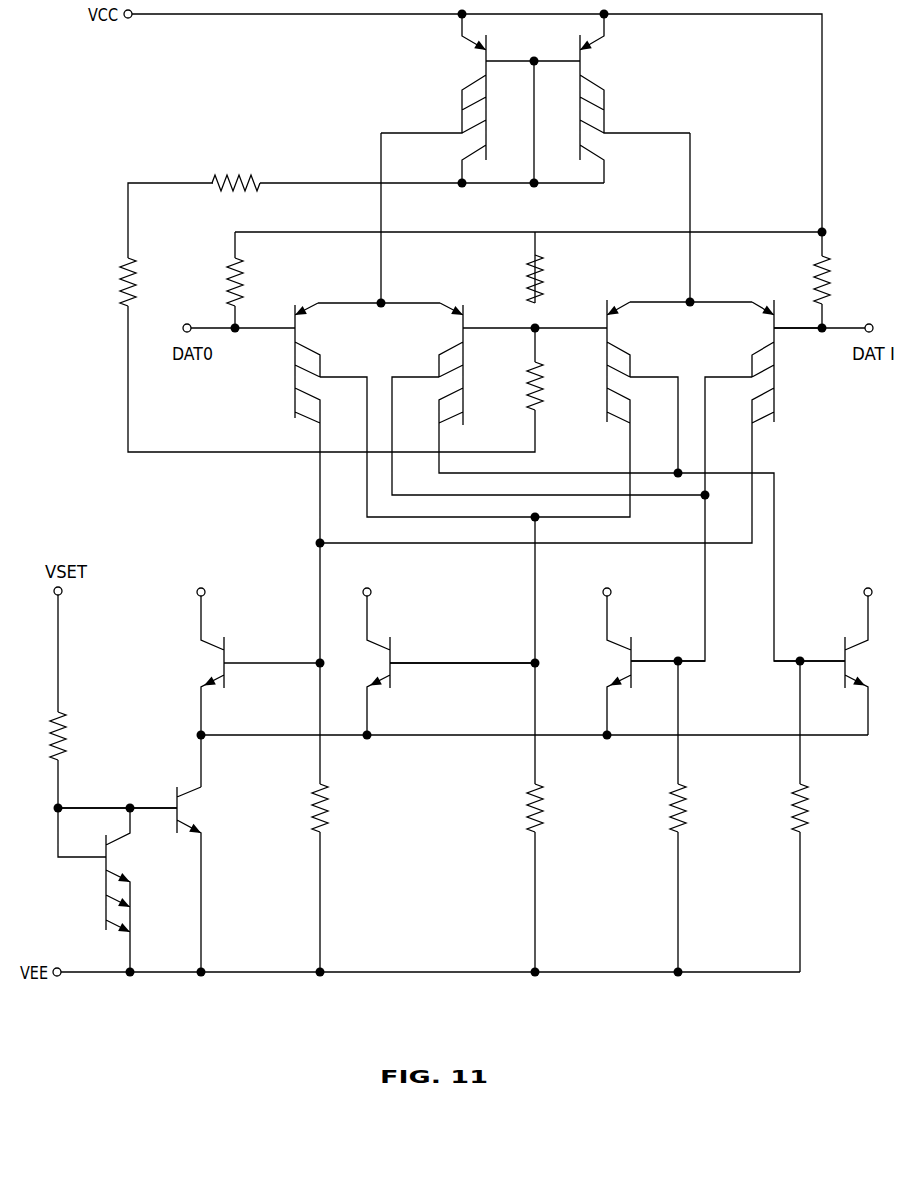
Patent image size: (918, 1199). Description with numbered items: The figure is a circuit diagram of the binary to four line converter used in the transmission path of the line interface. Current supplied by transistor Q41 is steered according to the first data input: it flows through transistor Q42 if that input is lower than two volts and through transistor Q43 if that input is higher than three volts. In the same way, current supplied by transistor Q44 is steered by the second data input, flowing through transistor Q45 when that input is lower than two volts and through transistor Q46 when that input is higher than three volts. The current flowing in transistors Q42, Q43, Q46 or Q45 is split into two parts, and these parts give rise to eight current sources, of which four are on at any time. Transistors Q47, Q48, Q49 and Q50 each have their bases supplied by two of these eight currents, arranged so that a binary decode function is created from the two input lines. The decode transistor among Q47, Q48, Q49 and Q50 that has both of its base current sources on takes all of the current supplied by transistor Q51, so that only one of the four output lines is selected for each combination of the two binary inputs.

The transistor Q41 is at (457, 98).
The transistor Q44 is at (612, 98).
The transistor Q42 is at (337, 363).
The transistor Q43 is at (458, 364).
The transistor Q46 is at (612, 361).
The transistor Q45 is at (756, 361).
The transistor Q47 is at (246, 661).
The transistor Q48 is at (441, 661).
The transistor Q49 is at (646, 661).
The transistor Q50 is at (833, 661).
The transistor Q51 is at (140, 879).